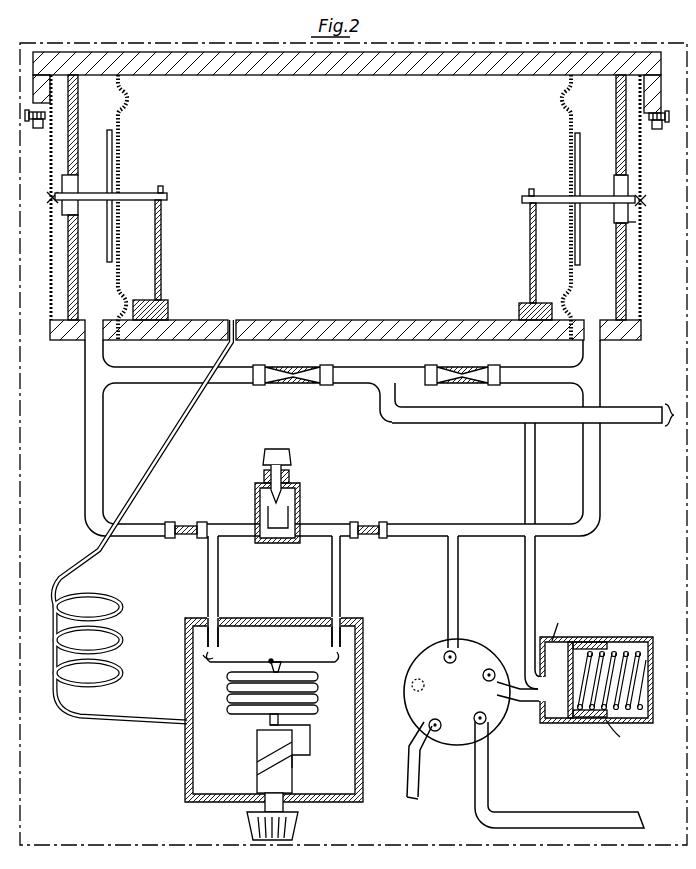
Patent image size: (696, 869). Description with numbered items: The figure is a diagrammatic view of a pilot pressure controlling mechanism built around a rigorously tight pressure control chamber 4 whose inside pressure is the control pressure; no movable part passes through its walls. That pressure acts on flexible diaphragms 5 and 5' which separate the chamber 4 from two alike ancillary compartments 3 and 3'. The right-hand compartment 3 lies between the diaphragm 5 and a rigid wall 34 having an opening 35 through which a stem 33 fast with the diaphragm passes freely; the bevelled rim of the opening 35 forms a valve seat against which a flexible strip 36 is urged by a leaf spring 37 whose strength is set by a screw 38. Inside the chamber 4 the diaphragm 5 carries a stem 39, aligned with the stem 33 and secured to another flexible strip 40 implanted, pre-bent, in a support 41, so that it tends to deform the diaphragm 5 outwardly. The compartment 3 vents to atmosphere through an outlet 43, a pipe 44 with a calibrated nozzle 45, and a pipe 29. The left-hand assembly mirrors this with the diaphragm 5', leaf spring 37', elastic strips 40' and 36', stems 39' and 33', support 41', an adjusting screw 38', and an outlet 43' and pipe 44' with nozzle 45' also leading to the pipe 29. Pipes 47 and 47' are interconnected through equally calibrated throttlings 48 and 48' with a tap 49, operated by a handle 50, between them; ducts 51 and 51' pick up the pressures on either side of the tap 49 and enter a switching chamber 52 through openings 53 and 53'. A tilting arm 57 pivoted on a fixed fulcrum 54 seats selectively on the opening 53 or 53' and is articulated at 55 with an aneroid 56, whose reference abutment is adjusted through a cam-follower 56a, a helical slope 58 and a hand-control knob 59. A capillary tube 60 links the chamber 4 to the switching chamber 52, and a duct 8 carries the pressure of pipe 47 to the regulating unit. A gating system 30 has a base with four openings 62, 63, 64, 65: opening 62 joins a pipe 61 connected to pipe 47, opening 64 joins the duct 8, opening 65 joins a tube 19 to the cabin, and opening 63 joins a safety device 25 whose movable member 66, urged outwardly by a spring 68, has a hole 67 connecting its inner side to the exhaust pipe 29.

The ancillary compartment 3 is at (606, 215).
The ancillary compartment 3' is at (84, 197).
The pressure control chamber 4 is at (347, 196).
The flexible diaphragm 5 is at (557, 207).
The flexible diaphragm 5' is at (134, 207).
The duct 8 is at (547, 826).
The tube 19 is at (418, 788).
The safety device 25 is at (608, 637).
The pipe 29 is at (628, 407).
The gating system 30 is at (478, 649).
The stem 33 is at (592, 199).
The stem 33' is at (98, 196).
The rigid wall 34 is at (627, 262).
The opening 35 is at (636, 224).
The flexible strip 36 is at (655, 197).
The flexible strip 36' is at (40, 197).
The leaf spring 37 is at (656, 190).
The leaf spring 37' is at (42, 208).
The screw 38 is at (664, 133).
The adjusting screw 38' is at (33, 133).
The stem 39 is at (578, 184).
The stem 39' is at (111, 180).
The flexible strip 40 is at (518, 253).
The elastic strip 40' is at (176, 250).
The support 41 is at (537, 296).
The support 41' is at (148, 293).
The outlet 43 is at (596, 346).
The outlet 43' is at (99, 403).
The pipe 44 is at (541, 376).
The pipe 44' is at (178, 370).
The calibrated nozzle 45 is at (462, 363).
The nozzle 45' is at (293, 363).
The pipe 47 is at (585, 479).
The pipe 47' is at (114, 465).
The calibrated throttling 48 is at (373, 514).
The calibrated throttling 48' is at (189, 513).
The tap 49 is at (300, 489).
The handle 50 is at (288, 459).
The duct 51 is at (351, 591).
The duct 51' is at (228, 591).
The switching chamber 52 is at (210, 775).
The opening 53 is at (332, 648).
The opening 53' is at (204, 644).
The fixed fulcrum 54 is at (269, 658).
The articulation 55 is at (282, 664).
The aneroid 56 is at (300, 694).
The cam-follower 56a is at (312, 748).
The tilting arm 57 is at (213, 663).
The helical slope 58 is at (292, 778).
The hand-control knob 59 is at (299, 822).
The capillary tube 60 is at (119, 607).
The pipe 61 is at (458, 590).
The opening 62 is at (445, 656).
The opening 63 is at (493, 670).
The opening 64 is at (488, 723).
The opening 65 is at (430, 725).
The movable member 66 is at (588, 645).
The hole 67 is at (569, 712).
The spring 68 is at (641, 685).